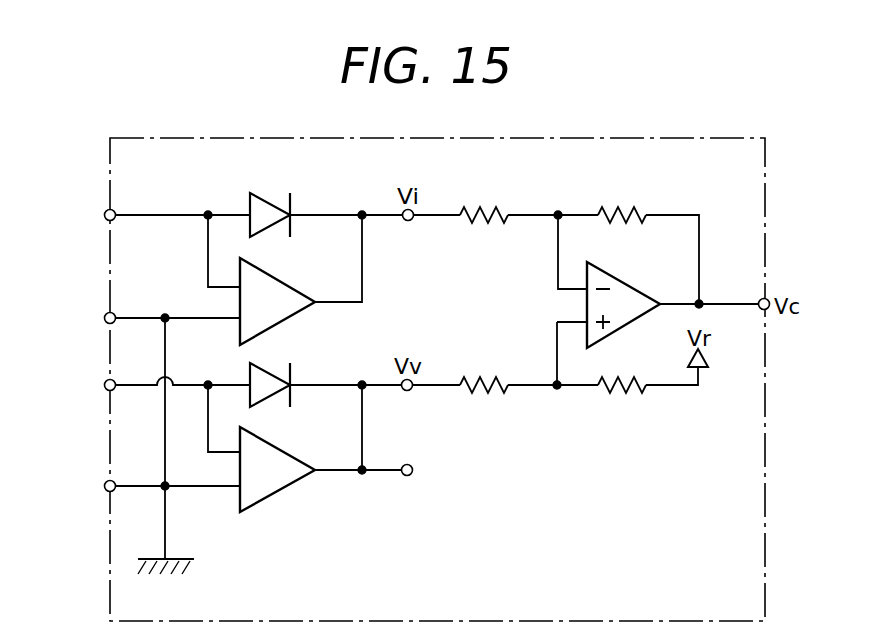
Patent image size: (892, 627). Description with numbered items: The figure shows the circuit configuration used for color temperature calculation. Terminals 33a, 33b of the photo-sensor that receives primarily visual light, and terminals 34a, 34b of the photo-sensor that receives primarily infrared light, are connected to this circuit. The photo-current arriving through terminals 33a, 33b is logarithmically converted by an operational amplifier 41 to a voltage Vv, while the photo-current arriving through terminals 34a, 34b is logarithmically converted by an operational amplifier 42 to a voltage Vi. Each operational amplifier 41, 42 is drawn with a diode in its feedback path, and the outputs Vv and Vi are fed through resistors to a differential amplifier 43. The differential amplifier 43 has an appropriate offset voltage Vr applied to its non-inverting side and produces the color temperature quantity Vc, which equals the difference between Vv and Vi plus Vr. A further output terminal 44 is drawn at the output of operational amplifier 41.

The terminal 34a is at (153, 217).
The terminal 34b is at (148, 320).
The terminal 33a is at (153, 387).
The terminal 33b is at (148, 488).
The operational amplifier 41 is at (270, 497).
The operational amplifier 42 is at (283, 325).
The differential amplifier 43 is at (628, 283).
The output terminal 44 is at (412, 476).